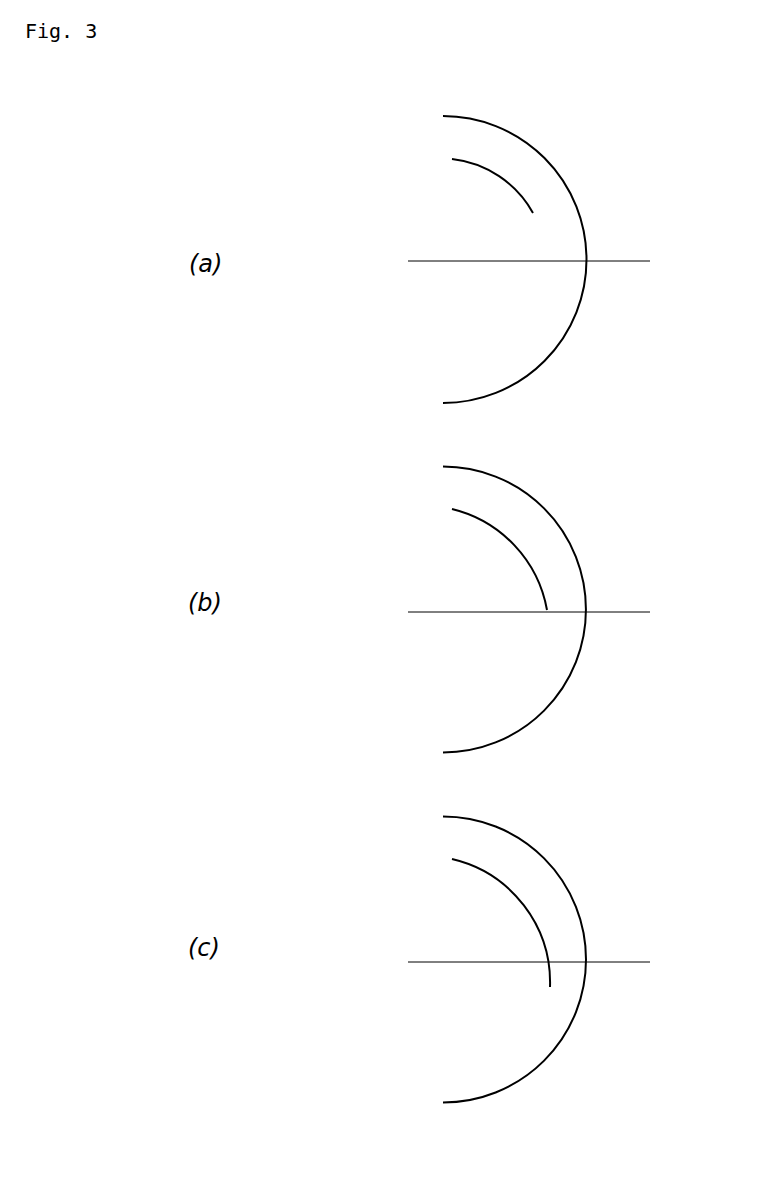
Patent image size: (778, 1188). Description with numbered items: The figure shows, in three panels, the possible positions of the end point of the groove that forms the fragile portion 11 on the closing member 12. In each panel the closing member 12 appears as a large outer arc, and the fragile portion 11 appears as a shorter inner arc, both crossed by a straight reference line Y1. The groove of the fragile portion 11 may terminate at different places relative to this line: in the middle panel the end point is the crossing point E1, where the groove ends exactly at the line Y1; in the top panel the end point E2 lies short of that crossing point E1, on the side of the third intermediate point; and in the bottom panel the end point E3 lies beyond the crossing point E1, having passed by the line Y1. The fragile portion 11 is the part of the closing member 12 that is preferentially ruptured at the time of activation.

The fragile portion 11 is at (520, 194).
The closing member 12 is at (488, 137).
The Y1 line Y1 is at (546, 614).
The crossing point E1 is at (562, 603).
The end point on the third intermediate point side E2 is at (550, 232).
The end point past the crossing point E3 is at (547, 1005).